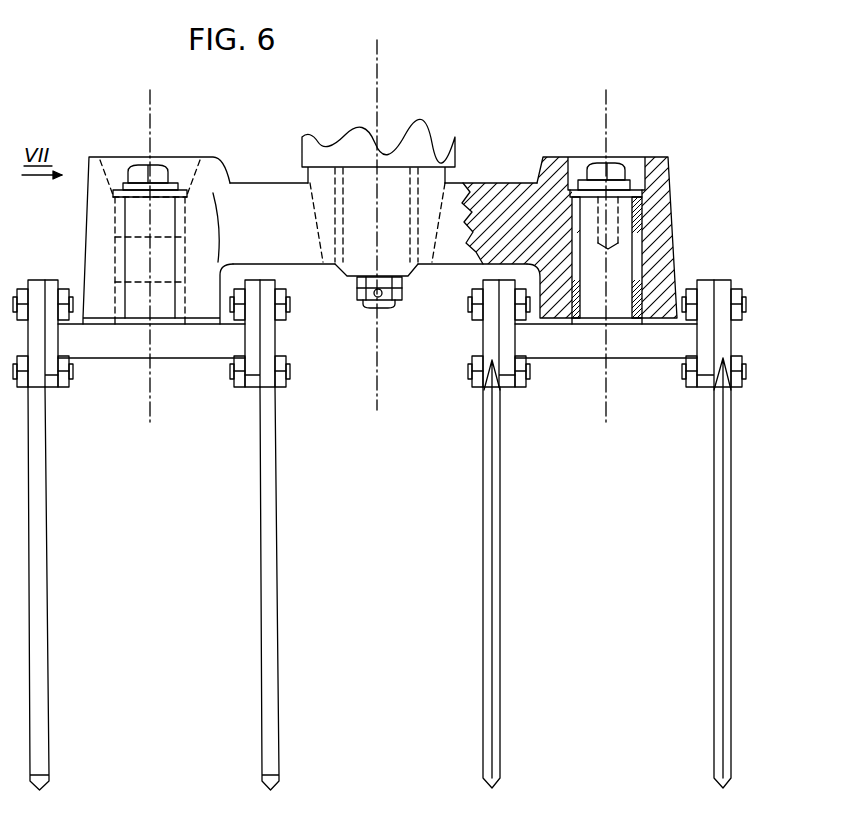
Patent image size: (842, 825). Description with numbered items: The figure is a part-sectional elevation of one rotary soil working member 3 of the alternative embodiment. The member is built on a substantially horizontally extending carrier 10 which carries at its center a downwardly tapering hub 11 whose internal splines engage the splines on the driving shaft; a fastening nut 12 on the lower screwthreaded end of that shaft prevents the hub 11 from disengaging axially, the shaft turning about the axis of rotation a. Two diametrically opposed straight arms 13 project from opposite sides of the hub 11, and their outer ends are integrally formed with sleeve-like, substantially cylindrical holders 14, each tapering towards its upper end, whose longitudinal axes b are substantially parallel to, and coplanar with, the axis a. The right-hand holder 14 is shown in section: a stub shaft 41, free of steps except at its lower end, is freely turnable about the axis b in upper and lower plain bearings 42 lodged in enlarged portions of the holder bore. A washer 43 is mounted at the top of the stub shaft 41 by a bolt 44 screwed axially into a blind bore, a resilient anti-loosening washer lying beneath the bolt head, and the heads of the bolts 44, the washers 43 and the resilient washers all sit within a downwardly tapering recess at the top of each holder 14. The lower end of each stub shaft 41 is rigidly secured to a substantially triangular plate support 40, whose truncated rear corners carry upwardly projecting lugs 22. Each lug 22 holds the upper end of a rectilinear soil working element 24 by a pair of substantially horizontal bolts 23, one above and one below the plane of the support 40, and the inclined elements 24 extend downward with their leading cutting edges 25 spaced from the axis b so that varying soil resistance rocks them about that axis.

The rotary soil working member 3 is at (380, 489).
The support or carrier 10 is at (296, 183).
The hub 11 is at (454, 170).
The fastening nut 12 is at (399, 292).
The arm 13 is at (304, 262).
The holder 14 is at (84, 225).
The lug 22 is at (50, 388).
The bolt 23 is at (64, 328).
The soil working element 24 is at (46, 587).
The leading cutting edge 25 is at (493, 607).
The support 40 is at (186, 360).
The stub shaft 41 is at (125, 262).
The plain bearing 42 is at (188, 240).
The washer 43 is at (190, 188).
The bolt 44 is at (160, 165).
The axis of rotation a is at (385, 397).
The longitudinal axis of holder b is at (157, 422).